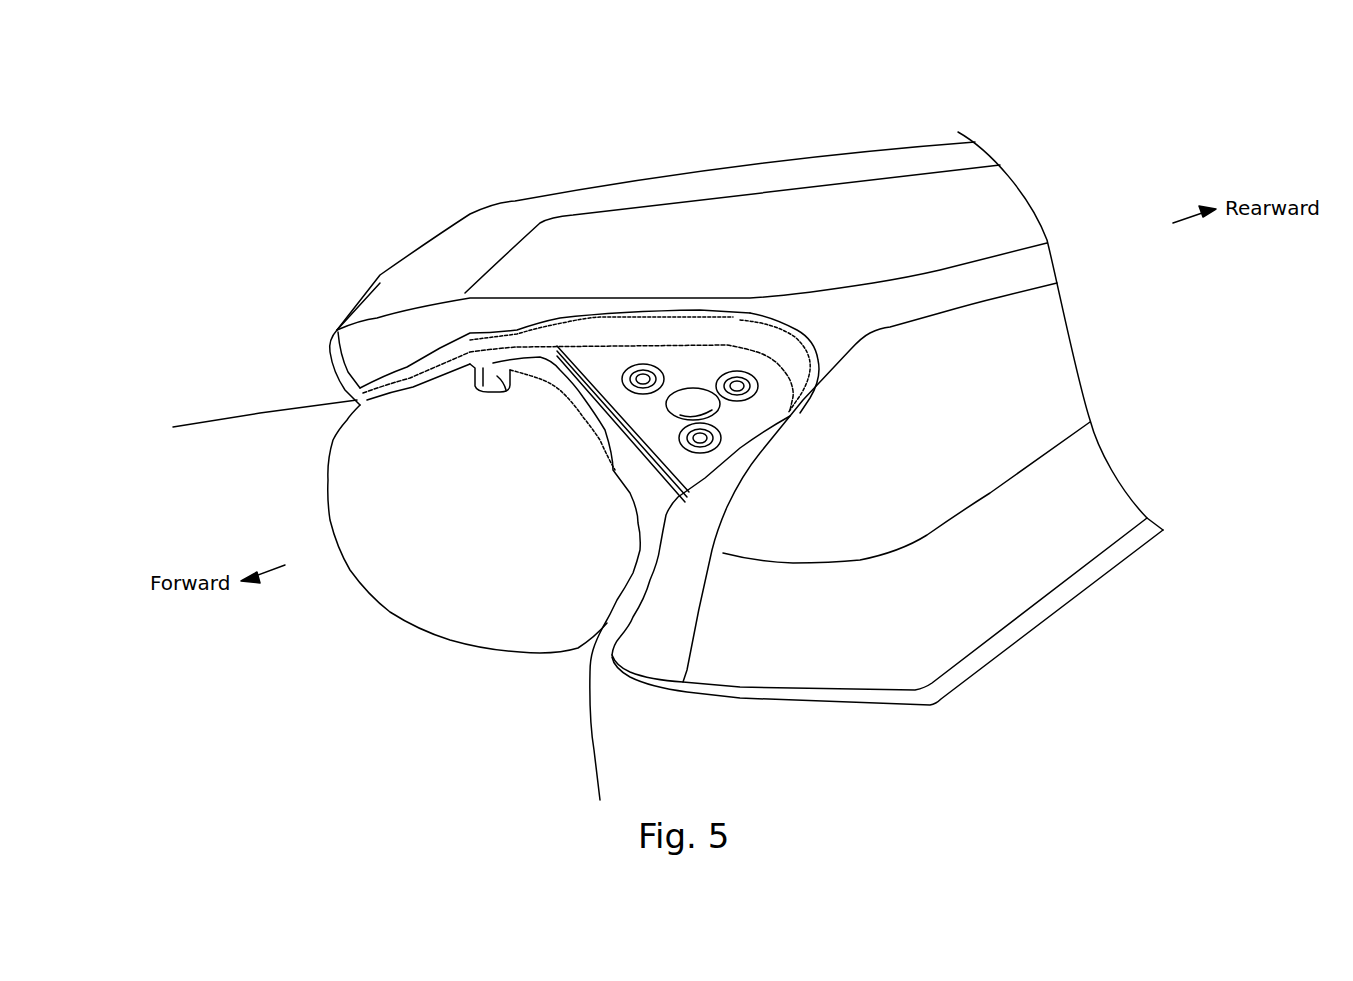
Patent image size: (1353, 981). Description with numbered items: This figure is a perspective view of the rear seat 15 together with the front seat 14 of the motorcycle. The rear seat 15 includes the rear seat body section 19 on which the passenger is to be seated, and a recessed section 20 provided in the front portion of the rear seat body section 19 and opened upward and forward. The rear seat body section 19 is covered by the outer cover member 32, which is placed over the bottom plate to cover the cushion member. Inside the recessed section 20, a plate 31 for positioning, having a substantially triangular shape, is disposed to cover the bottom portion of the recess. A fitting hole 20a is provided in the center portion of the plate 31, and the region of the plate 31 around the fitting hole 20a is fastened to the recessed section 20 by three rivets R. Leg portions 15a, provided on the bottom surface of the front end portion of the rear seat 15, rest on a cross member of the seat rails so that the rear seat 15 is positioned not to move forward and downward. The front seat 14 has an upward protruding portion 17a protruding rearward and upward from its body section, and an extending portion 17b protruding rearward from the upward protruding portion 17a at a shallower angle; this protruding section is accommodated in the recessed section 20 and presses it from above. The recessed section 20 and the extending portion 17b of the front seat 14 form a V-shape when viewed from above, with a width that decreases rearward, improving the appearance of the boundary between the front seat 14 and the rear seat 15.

The front seat 14 is at (180, 398).
The rear seat 15 is at (720, 134).
The leg portions 15a is at (507, 397).
The upward protruding portion 17a is at (405, 375).
The extending portion 17b is at (565, 327).
The rear seat body section 19 is at (902, 192).
The recessed section 20 is at (742, 333).
The fitting hole 20a is at (718, 413).
The plate 31 is at (747, 405).
The outer cover member 32 is at (667, 190).
The rivets R is at (660, 366).